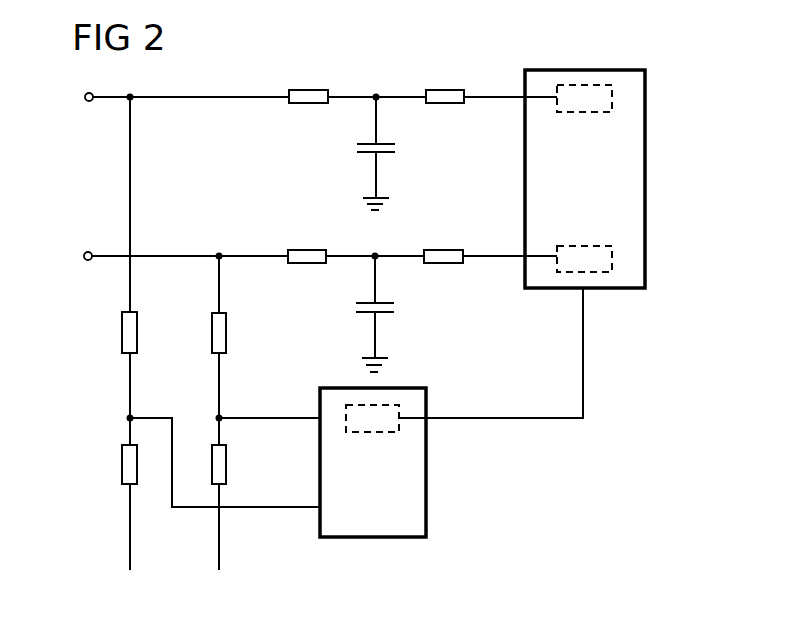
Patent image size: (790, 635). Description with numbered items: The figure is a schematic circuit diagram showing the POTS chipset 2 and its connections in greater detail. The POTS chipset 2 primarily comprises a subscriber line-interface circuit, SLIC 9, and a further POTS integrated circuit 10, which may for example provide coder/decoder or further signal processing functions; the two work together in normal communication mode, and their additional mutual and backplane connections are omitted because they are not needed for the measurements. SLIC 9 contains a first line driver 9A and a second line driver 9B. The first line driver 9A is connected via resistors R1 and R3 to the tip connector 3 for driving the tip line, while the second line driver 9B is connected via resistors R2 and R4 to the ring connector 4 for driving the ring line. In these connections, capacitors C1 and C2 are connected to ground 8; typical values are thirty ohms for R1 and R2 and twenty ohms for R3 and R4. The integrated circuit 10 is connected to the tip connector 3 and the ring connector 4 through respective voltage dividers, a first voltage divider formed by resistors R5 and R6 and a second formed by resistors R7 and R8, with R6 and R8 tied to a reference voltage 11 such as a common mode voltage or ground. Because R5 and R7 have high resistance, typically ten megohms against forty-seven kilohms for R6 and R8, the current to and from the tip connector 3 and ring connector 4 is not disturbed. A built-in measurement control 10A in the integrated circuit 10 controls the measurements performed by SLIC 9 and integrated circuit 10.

The POTS chipset 2 is at (596, 496).
The tip connector 3 is at (89, 103).
The ring connector 4 is at (88, 251).
The ground 8 is at (385, 200).
The subscriber line-interface circuit (SLIC) 9 is at (646, 178).
The first line driver 9A is at (585, 113).
The second line driver 9B is at (575, 246).
The integrated circuit 10 is at (370, 538).
The measurement control 10A is at (370, 433).
The reference voltage 11 is at (128, 546).
The resistor R1 is at (446, 90).
The resistor R2 is at (444, 250).
The resistor R3 is at (308, 90).
The resistor R4 is at (307, 250).
The resistor R5 is at (122, 332).
The resistor R6 is at (122, 463).
The resistor R7 is at (229, 336).
The resistor R8 is at (229, 467).
The capacitor C1 is at (396, 150).
The capacitor C2 is at (395, 311).